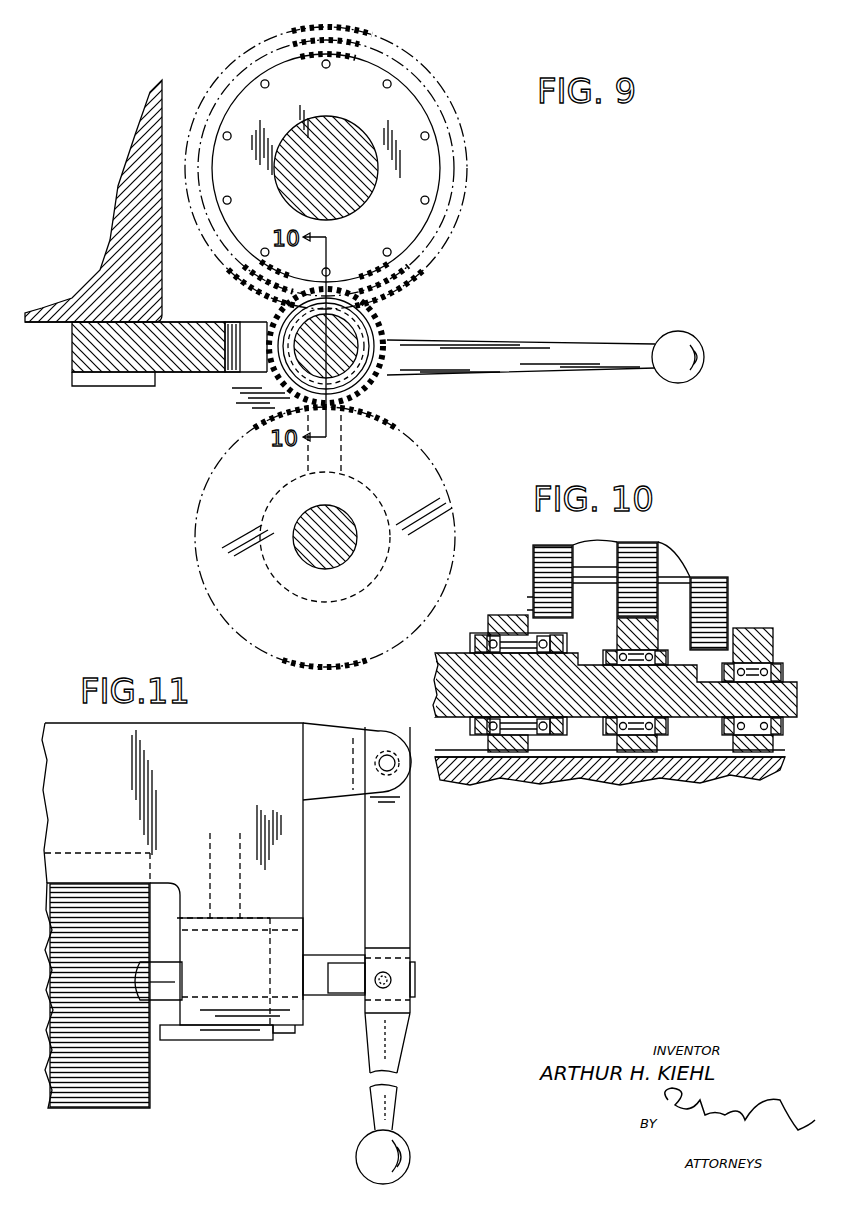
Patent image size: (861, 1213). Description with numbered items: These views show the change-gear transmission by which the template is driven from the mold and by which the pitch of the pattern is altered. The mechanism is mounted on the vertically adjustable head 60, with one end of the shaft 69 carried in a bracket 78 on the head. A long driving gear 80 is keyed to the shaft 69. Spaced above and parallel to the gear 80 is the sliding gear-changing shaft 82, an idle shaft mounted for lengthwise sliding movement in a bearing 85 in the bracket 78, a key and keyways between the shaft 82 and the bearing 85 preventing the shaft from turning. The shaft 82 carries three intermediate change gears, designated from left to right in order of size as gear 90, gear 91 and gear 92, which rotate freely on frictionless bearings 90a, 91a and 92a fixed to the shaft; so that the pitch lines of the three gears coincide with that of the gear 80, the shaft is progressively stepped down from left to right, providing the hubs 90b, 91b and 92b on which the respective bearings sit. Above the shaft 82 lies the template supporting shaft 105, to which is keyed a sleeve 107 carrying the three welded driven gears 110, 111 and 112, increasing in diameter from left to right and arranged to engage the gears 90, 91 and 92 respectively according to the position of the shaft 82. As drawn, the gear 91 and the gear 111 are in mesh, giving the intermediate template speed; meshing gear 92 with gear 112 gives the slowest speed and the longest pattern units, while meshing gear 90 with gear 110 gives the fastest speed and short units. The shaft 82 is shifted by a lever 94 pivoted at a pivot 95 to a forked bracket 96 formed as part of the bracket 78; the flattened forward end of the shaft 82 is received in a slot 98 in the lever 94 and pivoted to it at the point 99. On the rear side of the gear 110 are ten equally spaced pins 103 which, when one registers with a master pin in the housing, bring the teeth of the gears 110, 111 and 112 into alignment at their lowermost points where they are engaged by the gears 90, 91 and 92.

In FIG. 9, the head 60 is at (162, 278).
In FIG. 9, the bracket 78 is at (260, 550).
In FIG. 11, the bracket 78 is at (300, 878).
In FIG. 9, the long driving gear 80 is at (422, 456).
In FIG. 10, the long driving gear 80 is at (558, 778).
In FIG. 11, the long driving gear 80 is at (150, 1070).
In FIG. 9, the sliding gear-changing shaft 82 is at (350, 343).
In FIG. 10, the sliding gear-changing shaft 82 is at (700, 710).
In FIG. 11, the sliding gear-changing shaft 82 is at (306, 1005).
In FIG. 11, the bearing 85 is at (290, 958).
In FIG. 9, the intermediate change gear 90 is at (290, 320).
In FIG. 10, the intermediate change gear 90 is at (505, 616).
In FIG. 10, the frictionless bearing 90a is at (527, 644).
In FIG. 10, the hub 90b is at (502, 678).
In FIG. 10, the intermediate change gear 91 is at (632, 742).
In FIG. 10, the frictionless bearing 91a is at (650, 752).
In FIG. 10, the hub 91b is at (628, 690).
In FIG. 10, the intermediate change gear 92 is at (758, 658).
In FIG. 10, the frictionless bearing 92a is at (767, 736).
In FIG. 10, the hub 92b is at (790, 683).
In FIG. 9, the lever 94 is at (529, 344).
In FIG. 11, the lever 94 is at (405, 897).
In FIG. 11, the pivot 95 is at (390, 752).
In FIG. 11, the forked bracket 96 is at (330, 727).
In FIG. 11, the slot 98 is at (402, 1003).
In FIG. 11, the pivot point 99 is at (392, 980).
In FIG. 9, the shaft 69 is at (338, 518).
In FIG. 11, the shaft 69 is at (160, 940).
In FIG. 9, the pins 103 is at (384, 82).
In FIG. 10, the pins 103 is at (527, 610).
In FIG. 9, the template supporting shaft 105 is at (355, 137).
In FIG. 10, the sleeve 107 is at (600, 585).
In FIG. 9, the driven gear 110 is at (440, 185).
In FIG. 10, the driven gear 110 is at (545, 553).
In FIG. 9, the driven gear 111 is at (450, 202).
In FIG. 10, the driven gear 111 is at (636, 548).
In FIG. 9, the driven gear 112 is at (455, 224).
In FIG. 10, the driven gear 112 is at (712, 586).